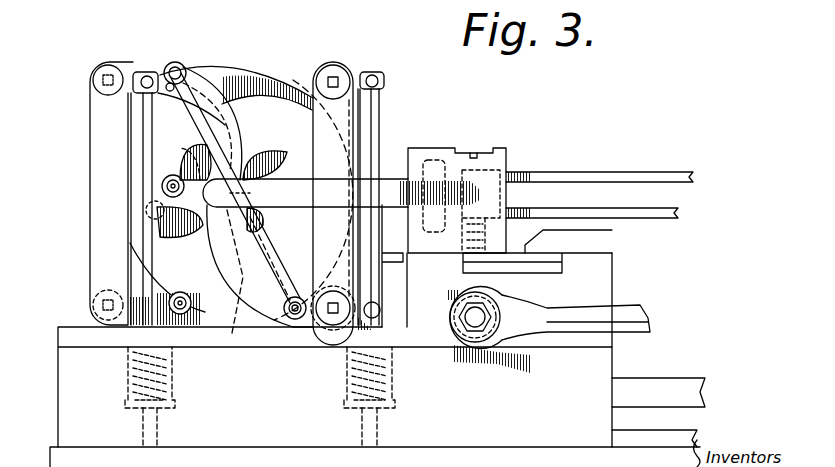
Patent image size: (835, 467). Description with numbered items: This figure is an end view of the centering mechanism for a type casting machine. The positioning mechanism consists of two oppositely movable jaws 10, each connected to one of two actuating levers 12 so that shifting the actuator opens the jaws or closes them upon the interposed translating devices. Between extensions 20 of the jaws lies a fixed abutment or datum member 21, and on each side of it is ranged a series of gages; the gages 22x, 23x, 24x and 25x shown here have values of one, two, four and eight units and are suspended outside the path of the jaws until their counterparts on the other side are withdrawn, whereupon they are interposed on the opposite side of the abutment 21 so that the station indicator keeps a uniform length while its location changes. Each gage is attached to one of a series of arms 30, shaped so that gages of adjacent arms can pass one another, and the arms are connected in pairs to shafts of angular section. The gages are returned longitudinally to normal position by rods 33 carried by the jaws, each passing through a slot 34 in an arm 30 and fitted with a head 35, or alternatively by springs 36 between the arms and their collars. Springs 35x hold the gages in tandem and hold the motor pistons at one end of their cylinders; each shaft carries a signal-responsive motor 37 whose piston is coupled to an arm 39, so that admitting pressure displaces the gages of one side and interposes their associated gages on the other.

The positioning jaws 10 is at (500, 166).
The actuating levers 12 is at (618, 175).
The jaw extensions 20 is at (236, 193).
The fixed abutment or datum member 21 is at (228, 335).
The one-unit gage 22x is at (150, 176).
The two-unit gage 23x is at (190, 228).
The four-unit gage 24x is at (265, 140).
The eight-unit gage 25x is at (270, 210).
The arms 30 is at (125, 105).
The rods 33 is at (182, 64).
The slot 34 is at (171, 91).
The heads 35 is at (197, 75).
The springs 35x is at (172, 378).
The springs 36 is at (132, 400).
The motor 37 is at (284, 403).
The arm 39 is at (127, 76).